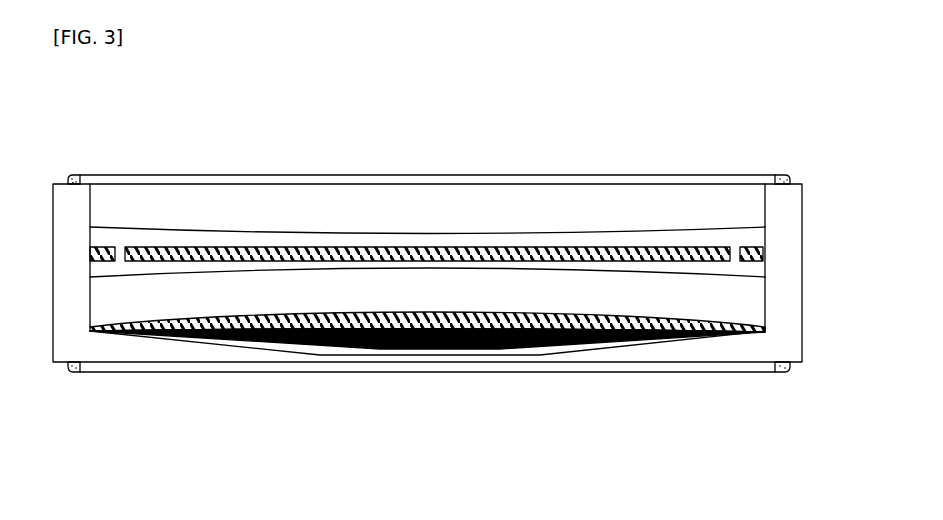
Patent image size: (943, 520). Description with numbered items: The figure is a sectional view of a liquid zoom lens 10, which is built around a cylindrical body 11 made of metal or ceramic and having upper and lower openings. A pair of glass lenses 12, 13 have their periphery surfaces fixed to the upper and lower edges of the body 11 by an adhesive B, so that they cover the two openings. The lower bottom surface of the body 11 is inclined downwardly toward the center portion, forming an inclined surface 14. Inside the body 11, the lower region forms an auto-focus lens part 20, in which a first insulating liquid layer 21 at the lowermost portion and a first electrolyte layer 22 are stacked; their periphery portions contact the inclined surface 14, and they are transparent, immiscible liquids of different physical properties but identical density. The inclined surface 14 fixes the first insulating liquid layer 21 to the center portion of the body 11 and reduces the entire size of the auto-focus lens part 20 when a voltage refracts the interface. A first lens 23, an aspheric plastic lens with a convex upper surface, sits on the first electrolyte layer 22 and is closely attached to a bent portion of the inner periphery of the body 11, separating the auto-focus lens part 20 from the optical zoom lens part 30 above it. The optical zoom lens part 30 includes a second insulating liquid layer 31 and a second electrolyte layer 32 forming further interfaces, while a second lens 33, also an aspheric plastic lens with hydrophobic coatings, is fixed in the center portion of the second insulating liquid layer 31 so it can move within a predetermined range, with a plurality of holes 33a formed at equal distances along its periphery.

The liquid zoom lens 10 is at (786, 119).
The cylindrical body 11 is at (797, 270).
The glass lens 12 is at (297, 178).
The glass lens 13 is at (297, 369).
The inclined surface 14 is at (210, 346).
The auto-focus lens part 20 is at (380, 433).
The first insulating liquid layer 21 is at (397, 356).
The first electrolyte layer 22 is at (453, 342).
The first lens 23 is at (508, 331).
The optical zoom lens part 30 is at (525, 115).
The second insulating liquid layer 31 is at (505, 240).
The second electrolyte layer 32 is at (457, 283).
The second lens 33 is at (406, 246).
The hole 33a is at (733, 250).
The adhesive B is at (784, 175).